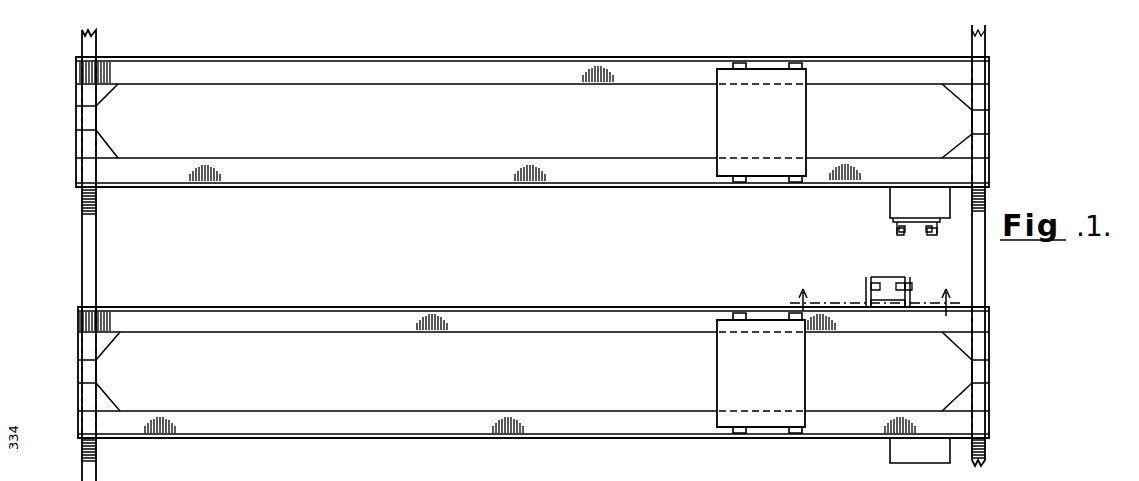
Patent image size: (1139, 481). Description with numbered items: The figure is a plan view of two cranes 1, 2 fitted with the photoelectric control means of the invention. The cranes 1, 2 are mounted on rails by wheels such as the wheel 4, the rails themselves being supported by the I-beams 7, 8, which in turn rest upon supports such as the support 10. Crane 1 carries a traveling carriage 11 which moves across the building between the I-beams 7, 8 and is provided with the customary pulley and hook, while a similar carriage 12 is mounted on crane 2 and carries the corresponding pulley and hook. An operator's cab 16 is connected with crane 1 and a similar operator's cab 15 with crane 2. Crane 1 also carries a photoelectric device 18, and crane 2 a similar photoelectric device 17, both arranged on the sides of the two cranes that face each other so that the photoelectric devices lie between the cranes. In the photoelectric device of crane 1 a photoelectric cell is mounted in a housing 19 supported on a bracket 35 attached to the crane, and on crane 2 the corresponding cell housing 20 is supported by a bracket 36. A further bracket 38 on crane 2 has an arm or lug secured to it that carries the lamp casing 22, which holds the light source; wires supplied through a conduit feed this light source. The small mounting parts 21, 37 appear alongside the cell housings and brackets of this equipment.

The crane 1 is at (384, 183).
The crane 2 is at (390, 434).
The wheel 4 is at (874, 303).
The I-beam 7 is at (88, 254).
The I-beam 8 is at (978, 276).
The support 10 is at (780, 475).
The traveling carriage 11 is at (793, 130).
The carriage 12 is at (797, 383).
The operator's cab 15 is at (907, 455).
The operator's cab 16 is at (897, 203).
The photoelectric device 17 is at (880, 277).
The photoelectric device 18 is at (921, 236).
The housing 19 is at (929, 238).
The housing 20 is at (868, 286).
The left clip 21 is at (897, 237).
The lamp casing 22 is at (912, 287).
The bracket 35 is at (938, 229).
The bracket 36 is at (880, 312).
The left holder 37 is at (896, 230).
The bracket 38 is at (911, 283).